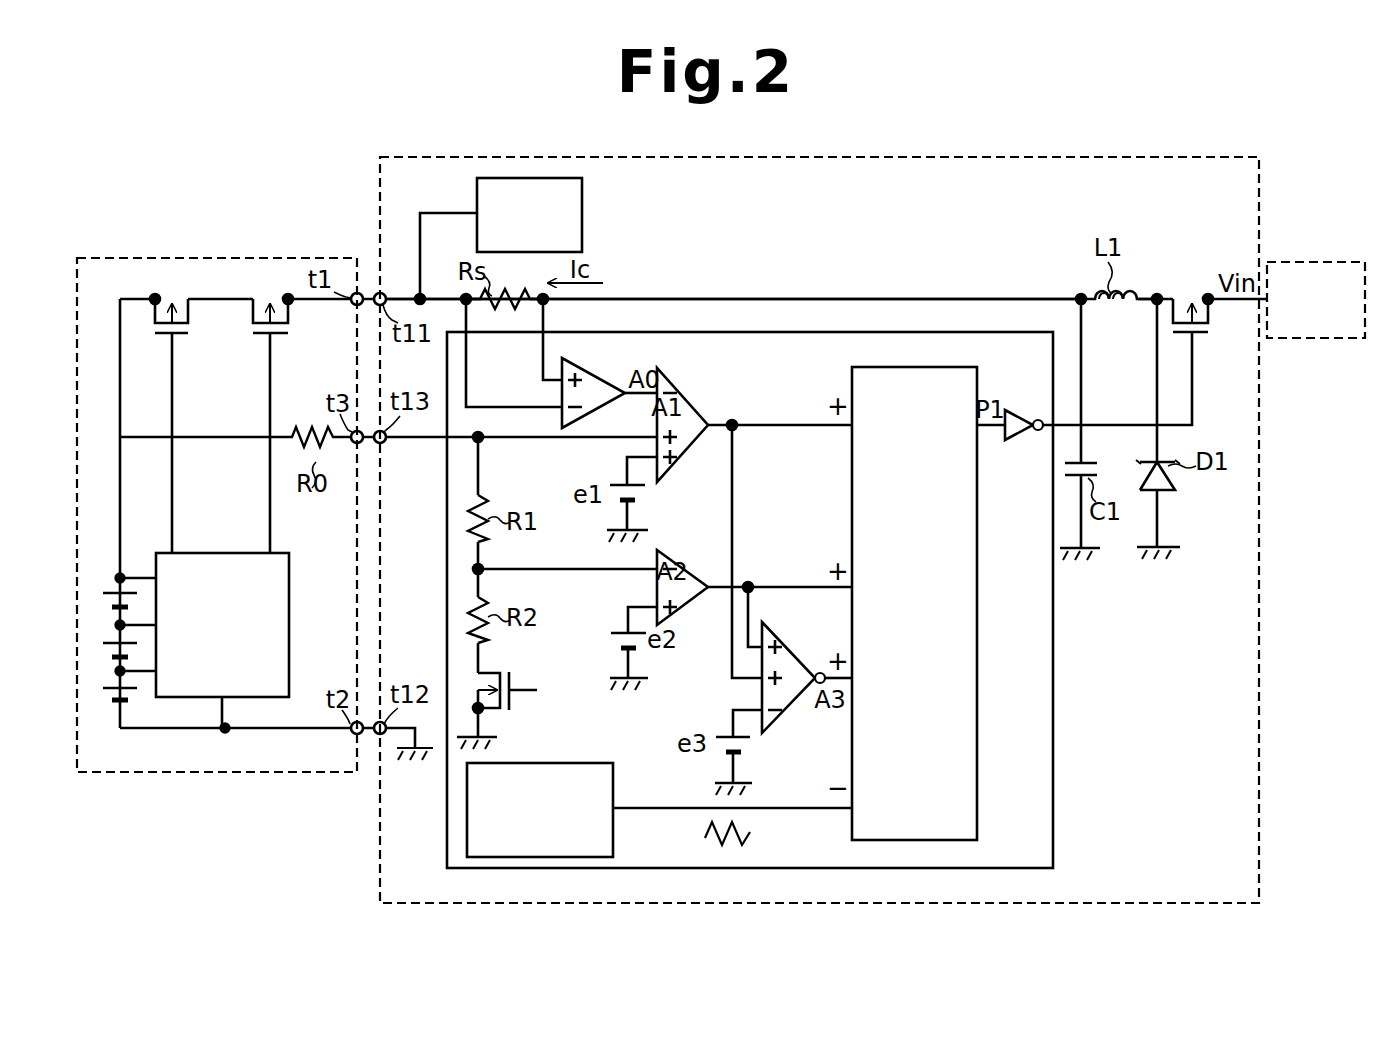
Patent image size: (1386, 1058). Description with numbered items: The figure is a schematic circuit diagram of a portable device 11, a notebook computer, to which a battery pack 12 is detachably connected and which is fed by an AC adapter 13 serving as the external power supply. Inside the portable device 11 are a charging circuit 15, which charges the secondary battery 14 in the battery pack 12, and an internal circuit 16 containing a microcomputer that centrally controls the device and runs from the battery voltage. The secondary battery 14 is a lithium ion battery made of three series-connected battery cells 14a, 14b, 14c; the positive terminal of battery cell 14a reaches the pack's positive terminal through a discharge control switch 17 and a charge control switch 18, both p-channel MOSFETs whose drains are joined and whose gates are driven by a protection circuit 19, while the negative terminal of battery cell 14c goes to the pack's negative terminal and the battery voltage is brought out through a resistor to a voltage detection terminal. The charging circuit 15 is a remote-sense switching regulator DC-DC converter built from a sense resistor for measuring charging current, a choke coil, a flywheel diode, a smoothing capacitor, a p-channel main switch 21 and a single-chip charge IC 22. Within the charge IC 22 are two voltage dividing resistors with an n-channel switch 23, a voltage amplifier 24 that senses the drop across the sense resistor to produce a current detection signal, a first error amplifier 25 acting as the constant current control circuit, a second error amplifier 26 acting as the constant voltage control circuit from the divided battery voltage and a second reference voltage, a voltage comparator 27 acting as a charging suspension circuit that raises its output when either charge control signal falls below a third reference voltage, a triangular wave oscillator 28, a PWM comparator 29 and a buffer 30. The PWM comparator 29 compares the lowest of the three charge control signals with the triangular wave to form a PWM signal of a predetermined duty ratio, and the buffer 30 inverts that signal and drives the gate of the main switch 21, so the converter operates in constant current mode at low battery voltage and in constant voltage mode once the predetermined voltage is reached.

The portable device 11 is at (1261, 203).
The battery pack 12 is at (235, 256).
The AC adapter 13 is at (1312, 338).
The secondary battery 14 is at (106, 604).
The battery cell 14a is at (115, 578).
The battery cell 14b is at (116, 643).
The battery cell 14c is at (116, 688).
The charging circuit 15 is at (924, 286).
The internal circuit 16 is at (582, 213).
The discharge control switch 17 is at (183, 336).
The charge control switch 18 is at (284, 336).
The protection circuit 19 is at (290, 620).
The main switch 21 is at (1204, 336).
The charge IC 22 is at (1053, 834).
The switch 23 is at (517, 704).
The voltage amplifier 24 is at (598, 376).
The first error amplifier 25 is at (686, 400).
The second error amplifier 26 is at (686, 566).
The voltage comparator 27 is at (792, 705).
The triangular wave oscillator 28 is at (613, 793).
The PWM comparator 29 is at (977, 735).
The buffer 30 is at (1027, 446).